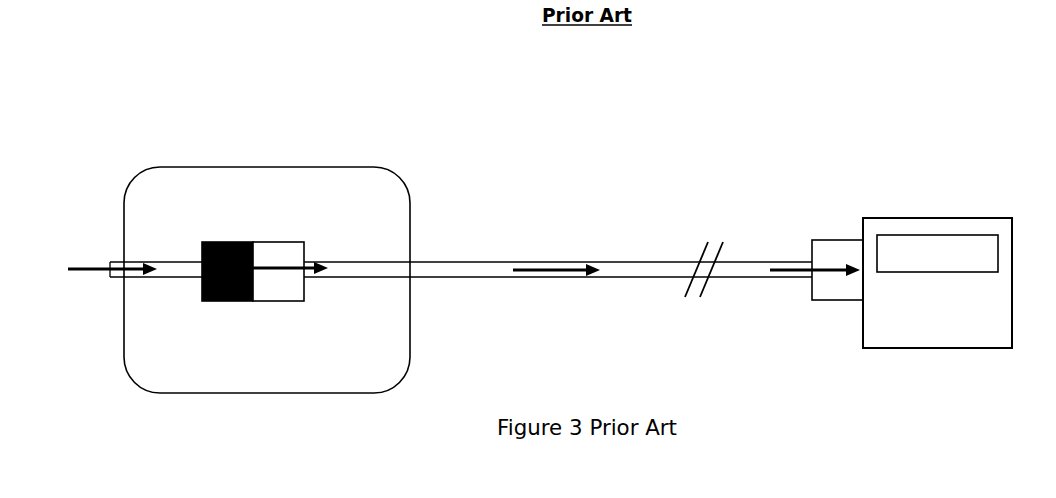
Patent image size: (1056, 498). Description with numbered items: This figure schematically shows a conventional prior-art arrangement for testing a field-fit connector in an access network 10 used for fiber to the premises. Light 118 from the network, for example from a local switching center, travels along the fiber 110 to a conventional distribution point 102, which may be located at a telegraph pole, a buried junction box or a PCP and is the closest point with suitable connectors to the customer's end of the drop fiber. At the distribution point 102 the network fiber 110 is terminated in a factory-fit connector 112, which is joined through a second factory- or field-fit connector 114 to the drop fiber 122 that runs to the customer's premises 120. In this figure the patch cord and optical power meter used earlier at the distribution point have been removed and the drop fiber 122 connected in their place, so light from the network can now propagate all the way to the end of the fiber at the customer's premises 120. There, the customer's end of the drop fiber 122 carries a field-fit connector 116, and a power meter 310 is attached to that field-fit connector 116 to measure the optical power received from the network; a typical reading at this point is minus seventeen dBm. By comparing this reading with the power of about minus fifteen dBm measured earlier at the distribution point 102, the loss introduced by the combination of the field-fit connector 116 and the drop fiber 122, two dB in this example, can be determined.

The access network 10 is at (742, 129).
The distribution point 102 is at (267, 265).
The fiber 110 is at (461, 283).
The factory-fit connector 112 is at (227, 258).
The second factory- or field-fit connector 114 is at (290, 258).
The field-fit connector 116 is at (816, 256).
The light 118 is at (108, 258).
The customer's premises 120 is at (951, 169).
The drop fiber 122 is at (589, 274).
The power meter 310 is at (917, 339).